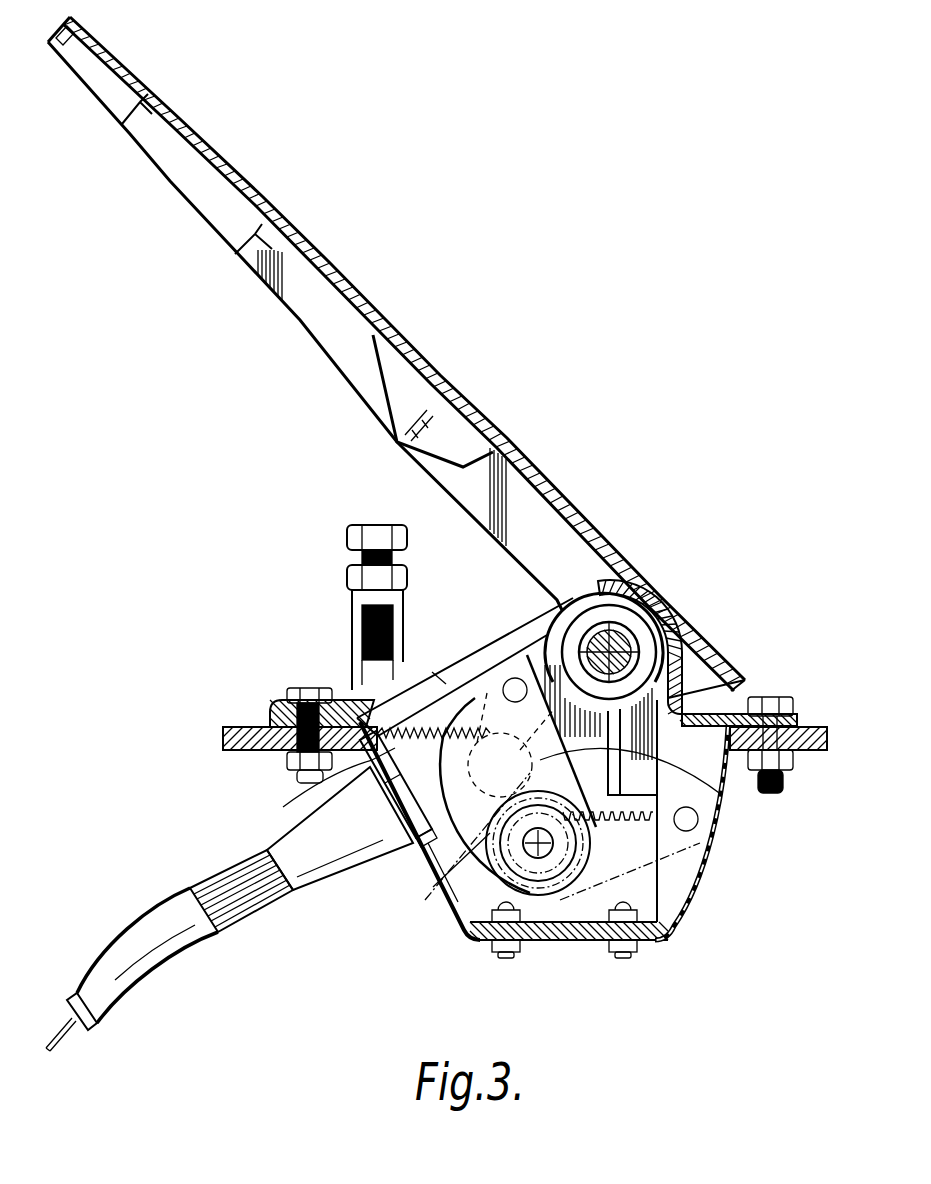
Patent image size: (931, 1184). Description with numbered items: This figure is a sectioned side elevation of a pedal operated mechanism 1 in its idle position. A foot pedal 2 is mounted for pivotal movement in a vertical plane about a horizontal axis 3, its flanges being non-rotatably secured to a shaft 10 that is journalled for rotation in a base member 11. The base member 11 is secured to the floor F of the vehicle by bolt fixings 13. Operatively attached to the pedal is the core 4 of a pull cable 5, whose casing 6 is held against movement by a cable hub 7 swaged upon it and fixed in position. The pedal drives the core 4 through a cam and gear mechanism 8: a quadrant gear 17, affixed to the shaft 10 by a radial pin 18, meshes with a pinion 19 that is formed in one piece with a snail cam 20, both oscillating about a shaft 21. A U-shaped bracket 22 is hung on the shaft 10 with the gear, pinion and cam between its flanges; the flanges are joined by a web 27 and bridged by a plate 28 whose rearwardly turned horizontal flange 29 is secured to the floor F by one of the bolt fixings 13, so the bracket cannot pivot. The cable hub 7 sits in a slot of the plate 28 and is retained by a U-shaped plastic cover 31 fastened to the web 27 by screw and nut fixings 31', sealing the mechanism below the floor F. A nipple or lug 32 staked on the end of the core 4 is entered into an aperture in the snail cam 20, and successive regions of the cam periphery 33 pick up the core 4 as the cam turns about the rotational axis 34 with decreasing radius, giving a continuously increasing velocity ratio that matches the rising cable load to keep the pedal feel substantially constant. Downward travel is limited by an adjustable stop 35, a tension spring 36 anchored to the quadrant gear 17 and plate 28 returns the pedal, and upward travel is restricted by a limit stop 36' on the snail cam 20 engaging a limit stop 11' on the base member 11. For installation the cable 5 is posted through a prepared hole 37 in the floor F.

The pedal operated mechanism 1 is at (641, 536).
The foot pedal 2 is at (337, 278).
The horizontal axis 3 is at (632, 612).
The core 4 is at (72, 1036).
The pull cable 5 is at (162, 969).
The casing 6 is at (178, 905).
The cable hub 7 is at (332, 875).
The cam and gear mechanism 8 is at (437, 880).
The shaft 10 is at (650, 628).
The base member 11 is at (465, 667).
The limit stop 11' is at (462, 667).
The bolt fixings 13 is at (308, 688).
The quadrant gear 17 is at (722, 799).
The radial pin 18 is at (688, 642).
The pinion 19 is at (563, 941).
The snail cam 20 is at (460, 912).
The shaft 21 is at (553, 850).
The U-shaped bracket 22 is at (660, 900).
The web 27 is at (540, 941).
The plate 28 is at (325, 783).
The horizontal flange 29 is at (266, 748).
The U-shaped plastic cover 31 is at (717, 833).
The screw and nut fixings 31' is at (563, 949).
The nipple or lug 32 is at (518, 682).
The cam periphery 33 is at (427, 860).
The rotational axis 34 is at (527, 790).
The adjustable stop 35 is at (363, 540).
The tension spring 36 is at (405, 690).
The limit stop 36' is at (427, 658).
The prepared hole 37 is at (723, 672).
The floor F is at (233, 727).